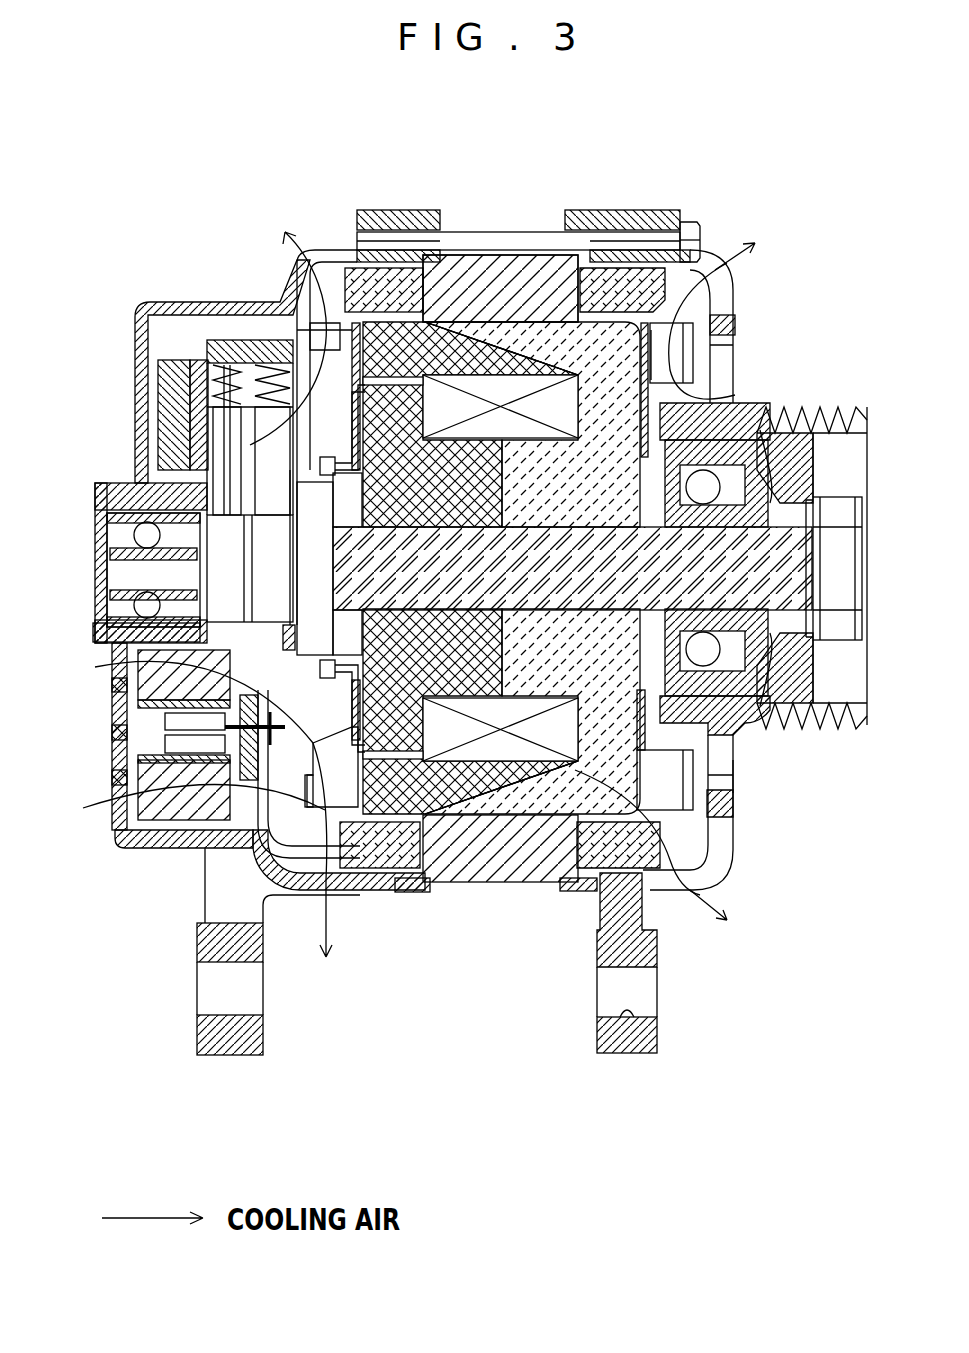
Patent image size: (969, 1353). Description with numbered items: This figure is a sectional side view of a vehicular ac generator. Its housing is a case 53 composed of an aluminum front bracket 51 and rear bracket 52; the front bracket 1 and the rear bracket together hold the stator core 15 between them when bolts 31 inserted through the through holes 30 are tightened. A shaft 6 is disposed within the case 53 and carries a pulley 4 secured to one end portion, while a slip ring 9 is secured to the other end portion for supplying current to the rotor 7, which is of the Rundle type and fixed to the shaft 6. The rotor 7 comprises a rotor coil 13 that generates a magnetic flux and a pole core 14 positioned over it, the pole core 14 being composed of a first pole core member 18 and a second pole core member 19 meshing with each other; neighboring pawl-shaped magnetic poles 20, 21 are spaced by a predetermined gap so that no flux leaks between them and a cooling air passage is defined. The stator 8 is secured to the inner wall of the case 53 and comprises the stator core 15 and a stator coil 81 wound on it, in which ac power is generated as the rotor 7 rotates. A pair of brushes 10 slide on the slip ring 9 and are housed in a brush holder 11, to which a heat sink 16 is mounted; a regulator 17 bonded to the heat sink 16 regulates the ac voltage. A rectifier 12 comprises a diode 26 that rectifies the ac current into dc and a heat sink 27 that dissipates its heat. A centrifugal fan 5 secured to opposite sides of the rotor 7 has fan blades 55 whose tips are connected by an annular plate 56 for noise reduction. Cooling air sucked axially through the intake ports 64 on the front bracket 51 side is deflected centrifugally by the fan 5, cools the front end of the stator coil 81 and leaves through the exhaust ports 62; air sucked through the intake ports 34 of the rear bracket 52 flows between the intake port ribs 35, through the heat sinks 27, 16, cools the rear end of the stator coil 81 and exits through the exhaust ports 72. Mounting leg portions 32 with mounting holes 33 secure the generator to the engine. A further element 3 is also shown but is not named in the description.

The front bracket 1 is at (730, 837).
The stator mounting portion 3 is at (573, 895).
The pulley 4 is at (867, 407).
The fan 5 is at (667, 357).
The shaft 6 is at (798, 562).
The rotor 7 is at (782, 590).
The stator 8 is at (535, 280).
The slip ring 9 is at (223, 577).
The brushes 10 is at (230, 430).
The brush holder 11 is at (260, 330).
The rectifier 12 is at (117, 830).
The rotor coil 13 is at (640, 887).
The pole core 14 is at (720, 789).
The stator core 15 is at (523, 333).
The heat sink 16 is at (168, 378).
The regulator 17 is at (193, 348).
The first pole core member 18 is at (360, 880).
The second pole core member 19 is at (506, 810).
The pawl-shaped magnetic pole 20 is at (473, 337).
The pawl-shaped magnetic pole 21 is at (500, 337).
The diode 26 is at (180, 713).
The heat sink 27 is at (135, 672).
The through holes 30 is at (617, 232).
The bolts 31 is at (700, 240).
The mounting leg portions 32 is at (262, 1055).
The mounting holes 33 is at (215, 1008).
The intake ports 34 is at (104, 763).
The intake port ribs 35 is at (113, 732).
The front bracket 51 is at (740, 817).
The rear bracket 52 is at (141, 860).
The case 53 is at (425, 902).
The fan blades 55 is at (735, 325).
The annular plate 56 is at (718, 313).
The exhaust ports 62 is at (738, 266).
The intake ports 64 is at (744, 370).
The exhaust ports 72 is at (337, 248).
The stator coil 81 is at (645, 238).